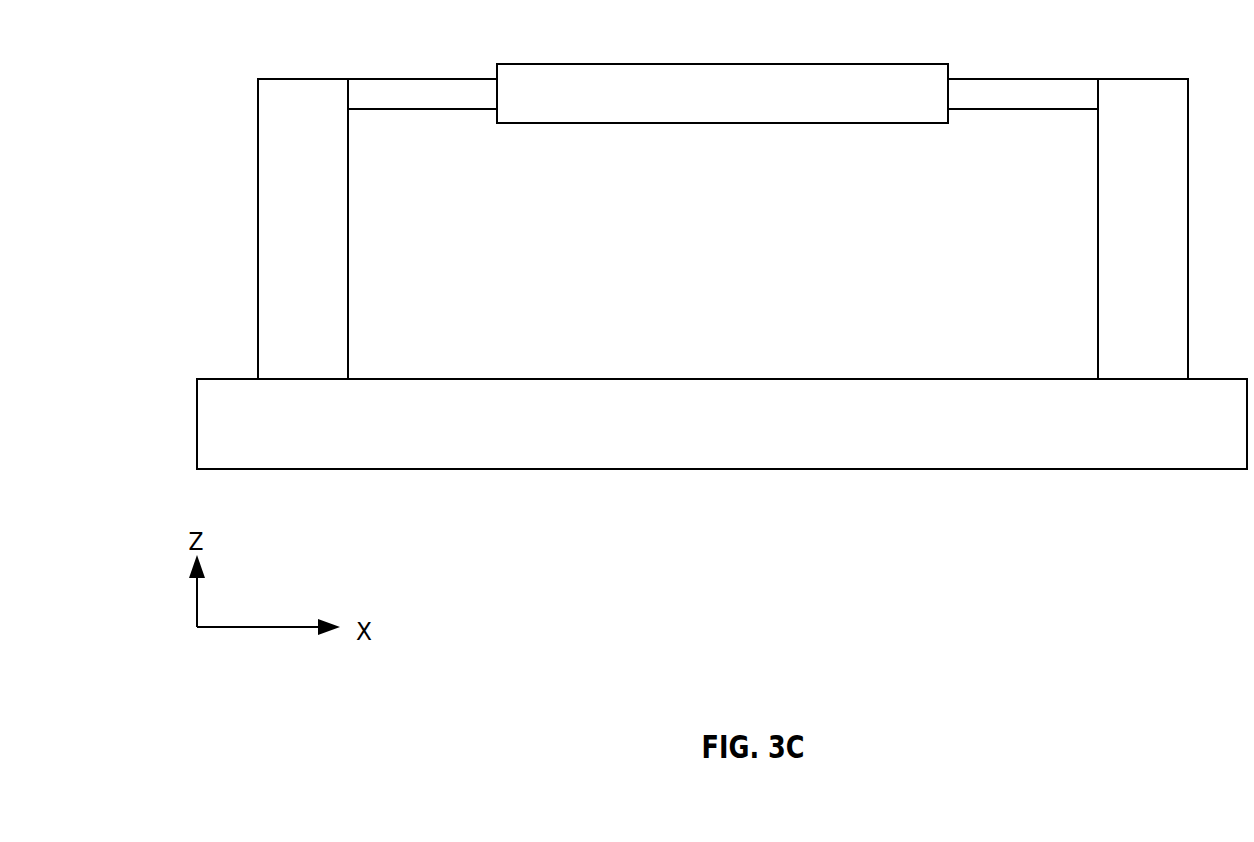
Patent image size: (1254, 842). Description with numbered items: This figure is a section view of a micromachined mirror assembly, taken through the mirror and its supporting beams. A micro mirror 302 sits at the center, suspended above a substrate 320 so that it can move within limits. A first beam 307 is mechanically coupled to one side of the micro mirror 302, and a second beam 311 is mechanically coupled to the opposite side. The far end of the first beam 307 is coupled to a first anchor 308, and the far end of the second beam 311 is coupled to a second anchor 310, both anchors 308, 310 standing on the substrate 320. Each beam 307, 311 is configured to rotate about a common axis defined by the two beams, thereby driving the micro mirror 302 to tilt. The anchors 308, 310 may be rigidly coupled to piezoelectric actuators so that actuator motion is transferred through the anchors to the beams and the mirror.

The micro mirror 302 is at (722, 93).
The first beam 307 is at (402, 115).
The first anchor 308 is at (303, 229).
The second anchor 310 is at (1143, 229).
The second beam 311 is at (1022, 120).
The substrate 320 is at (722, 424).